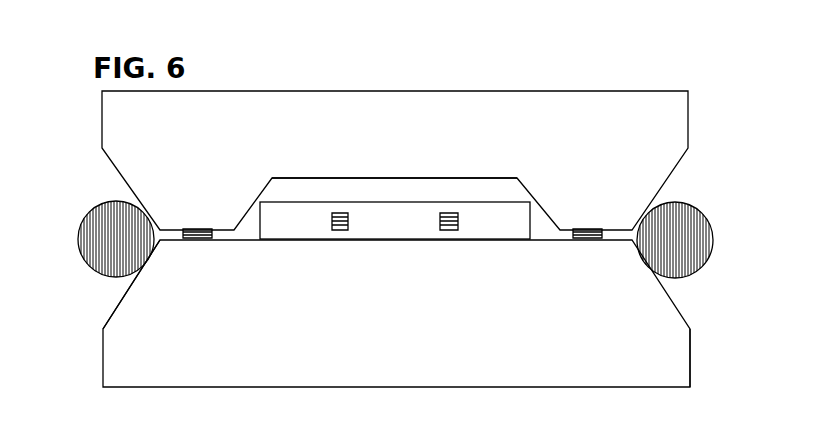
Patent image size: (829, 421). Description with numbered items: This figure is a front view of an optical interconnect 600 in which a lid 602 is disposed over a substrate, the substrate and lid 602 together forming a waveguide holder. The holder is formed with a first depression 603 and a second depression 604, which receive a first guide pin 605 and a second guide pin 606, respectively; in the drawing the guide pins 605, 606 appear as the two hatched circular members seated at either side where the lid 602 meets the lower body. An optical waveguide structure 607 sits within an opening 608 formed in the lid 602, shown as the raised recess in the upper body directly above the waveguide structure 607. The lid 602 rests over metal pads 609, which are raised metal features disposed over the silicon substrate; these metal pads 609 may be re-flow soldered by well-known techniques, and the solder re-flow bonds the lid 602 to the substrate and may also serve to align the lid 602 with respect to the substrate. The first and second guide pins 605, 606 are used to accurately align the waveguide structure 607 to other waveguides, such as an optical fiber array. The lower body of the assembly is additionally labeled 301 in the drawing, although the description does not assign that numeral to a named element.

The optical interconnect 600 is at (771, 95).
The lid 602 is at (683, 130).
The first depression 603 is at (672, 298).
The second depression 604 is at (118, 305).
The first guide pin 605 is at (700, 214).
The second guide pin 606 is at (82, 218).
The optical waveguide structure 607 is at (520, 193).
The opening 608 is at (420, 194).
The metal pads 609 is at (198, 238).
The substrate base 301 is at (690, 357).